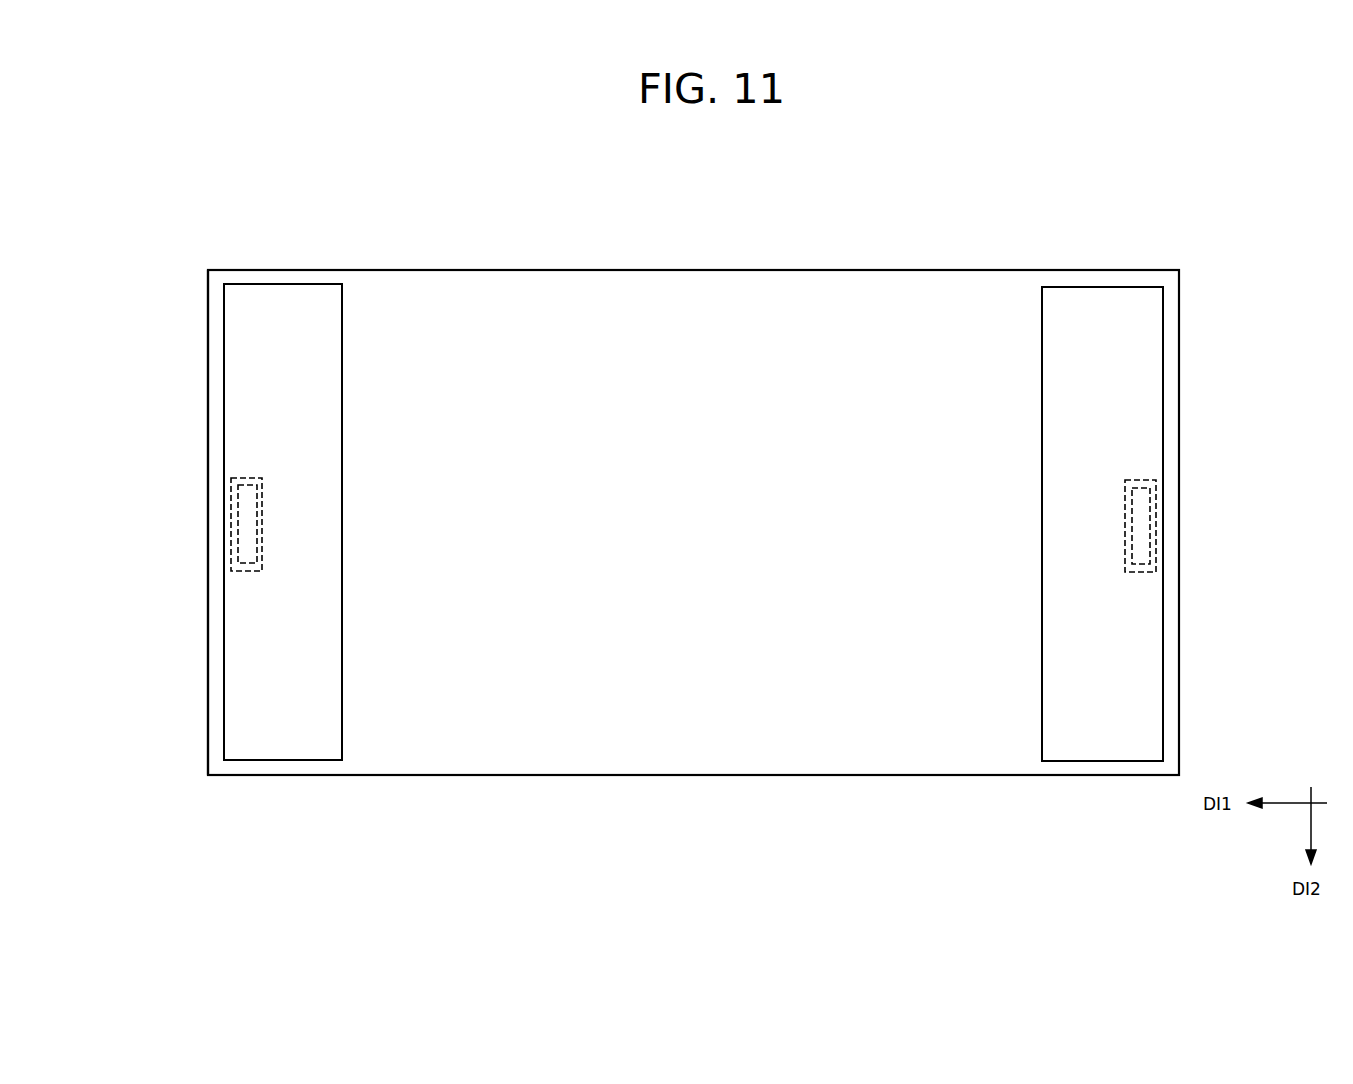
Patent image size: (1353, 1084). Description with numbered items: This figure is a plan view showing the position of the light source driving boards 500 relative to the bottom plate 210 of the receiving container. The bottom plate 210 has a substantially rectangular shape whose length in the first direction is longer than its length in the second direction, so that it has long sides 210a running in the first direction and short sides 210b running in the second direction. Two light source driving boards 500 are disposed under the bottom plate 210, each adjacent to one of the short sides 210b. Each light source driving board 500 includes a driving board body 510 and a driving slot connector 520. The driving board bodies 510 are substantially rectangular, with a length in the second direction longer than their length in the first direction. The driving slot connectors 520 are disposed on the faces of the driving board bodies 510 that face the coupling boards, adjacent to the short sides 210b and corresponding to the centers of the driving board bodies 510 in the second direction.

The bottom plate 210 is at (708, 752).
The long sides 210a is at (605, 775).
The short sides 210b is at (207, 381).
The light source driving board 500 is at (116, 537).
The driving board body 510 is at (238, 458).
The driving slot connector 520 is at (237, 525).